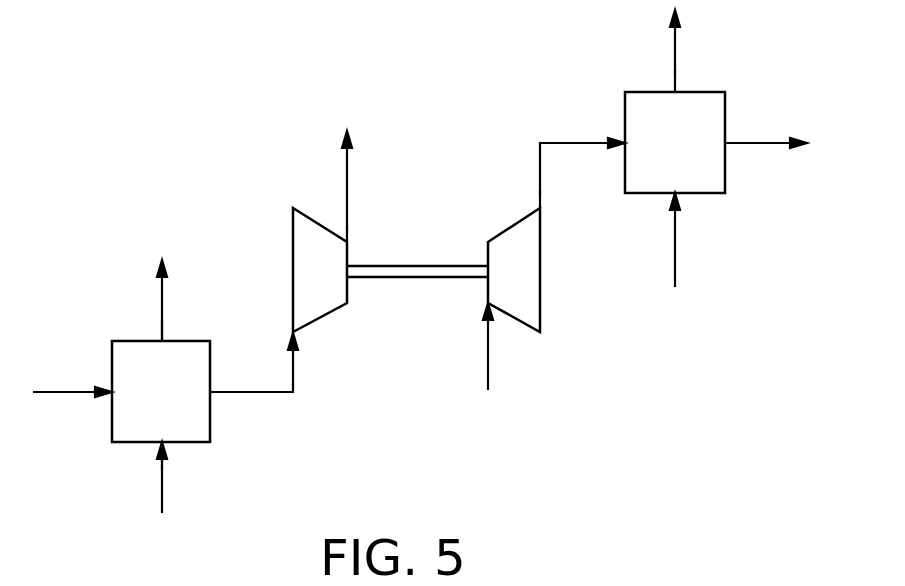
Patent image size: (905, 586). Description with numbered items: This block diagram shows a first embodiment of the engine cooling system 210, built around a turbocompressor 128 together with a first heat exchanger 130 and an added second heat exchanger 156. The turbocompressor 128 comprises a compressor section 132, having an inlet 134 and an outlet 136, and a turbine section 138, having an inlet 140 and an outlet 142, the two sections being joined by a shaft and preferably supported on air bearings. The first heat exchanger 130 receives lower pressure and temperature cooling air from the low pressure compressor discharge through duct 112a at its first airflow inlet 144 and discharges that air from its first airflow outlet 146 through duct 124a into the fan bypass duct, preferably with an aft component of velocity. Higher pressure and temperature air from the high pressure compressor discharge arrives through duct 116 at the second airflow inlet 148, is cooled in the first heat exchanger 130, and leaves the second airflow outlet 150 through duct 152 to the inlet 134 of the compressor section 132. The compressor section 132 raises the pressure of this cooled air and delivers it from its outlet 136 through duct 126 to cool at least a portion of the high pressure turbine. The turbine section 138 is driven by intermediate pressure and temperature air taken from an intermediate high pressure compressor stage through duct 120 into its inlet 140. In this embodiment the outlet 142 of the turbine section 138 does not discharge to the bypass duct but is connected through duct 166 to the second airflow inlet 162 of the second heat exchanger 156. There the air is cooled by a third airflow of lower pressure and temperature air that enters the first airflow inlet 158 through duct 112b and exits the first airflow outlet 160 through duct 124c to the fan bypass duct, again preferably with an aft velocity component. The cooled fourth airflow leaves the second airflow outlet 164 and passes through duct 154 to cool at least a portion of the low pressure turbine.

The engine cooling system 210 is at (365, 60).
The first heat exchanger 130 is at (183, 407).
The duct 116 is at (43, 393).
The second airflow inlet 148 is at (112, 390).
The duct 124a is at (162, 300).
The first airflow outlet 146 is at (162, 341).
The first airflow inlet 144 is at (165, 445).
The duct 112a is at (162, 500).
The second airflow outlet 150 is at (210, 385).
The duct 152 is at (255, 392).
The inlet 134 is at (293, 332).
The compressor section 132 is at (340, 284).
The outlet 136 is at (347, 242).
The duct 126 is at (347, 170).
The turbocompressor 128 is at (415, 266).
The turbine section 138 is at (533, 284).
The inlet 140 is at (488, 303).
The duct 120 is at (488, 360).
The outlet 142 is at (540, 208).
The duct 166 is at (555, 143).
The second airflow inlet 162 is at (625, 140).
The second heat exchanger 156 is at (697, 151).
The first airflow outlet 160 is at (675, 92).
The duct 124c is at (675, 45).
The first airflow inlet 158 is at (678, 195).
The duct 112b is at (675, 255).
The second airflow outlet 164 is at (725, 140).
The duct 154 is at (745, 143).